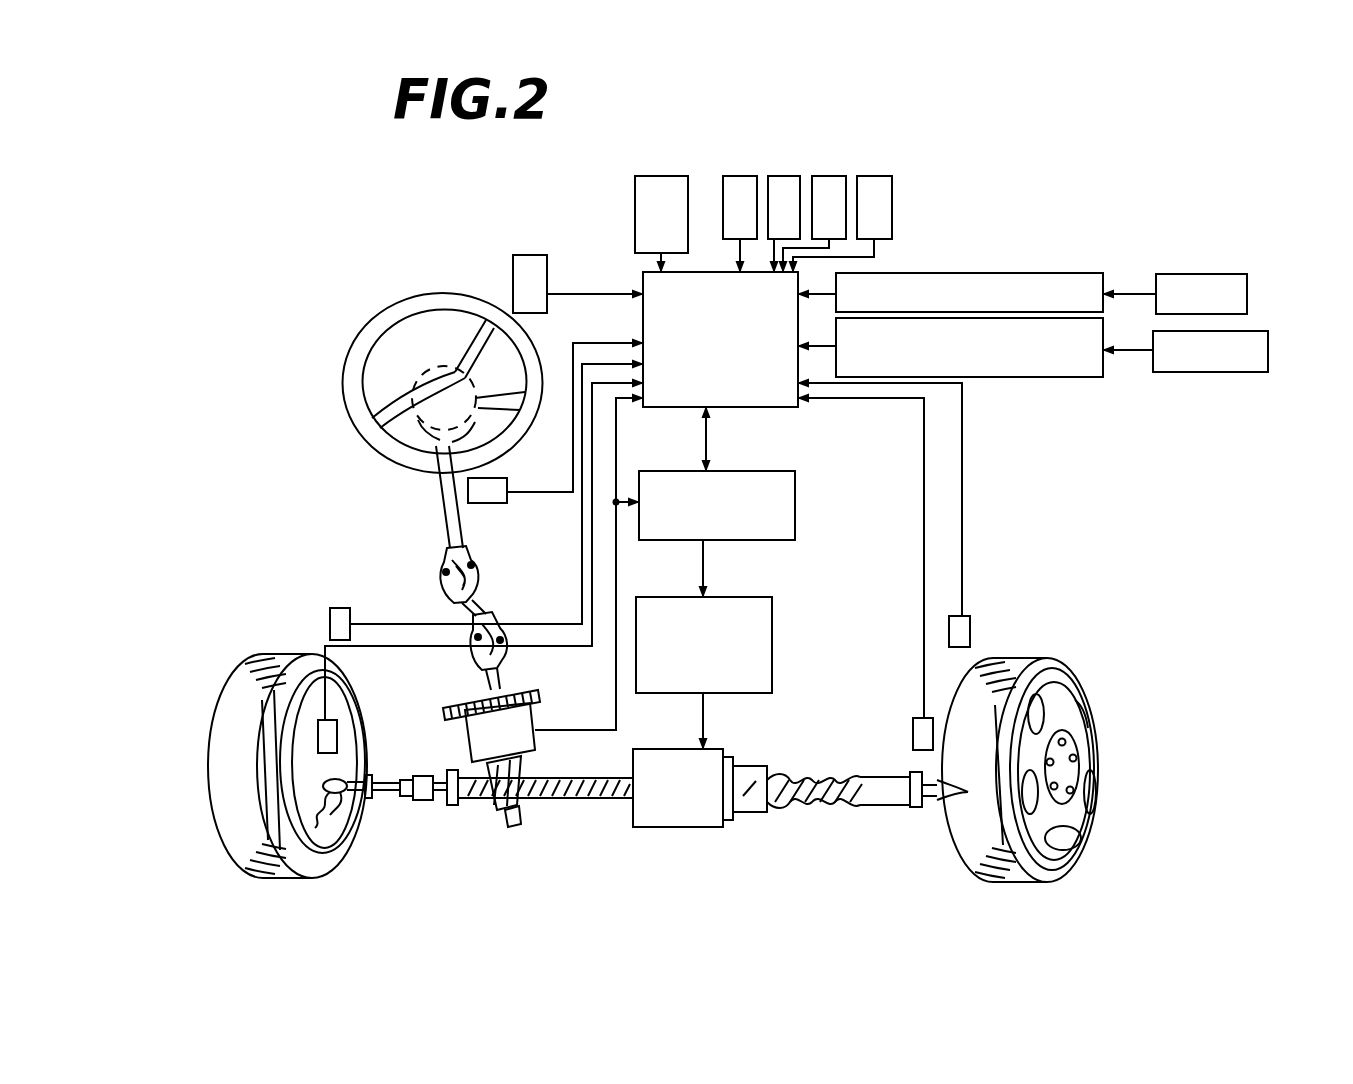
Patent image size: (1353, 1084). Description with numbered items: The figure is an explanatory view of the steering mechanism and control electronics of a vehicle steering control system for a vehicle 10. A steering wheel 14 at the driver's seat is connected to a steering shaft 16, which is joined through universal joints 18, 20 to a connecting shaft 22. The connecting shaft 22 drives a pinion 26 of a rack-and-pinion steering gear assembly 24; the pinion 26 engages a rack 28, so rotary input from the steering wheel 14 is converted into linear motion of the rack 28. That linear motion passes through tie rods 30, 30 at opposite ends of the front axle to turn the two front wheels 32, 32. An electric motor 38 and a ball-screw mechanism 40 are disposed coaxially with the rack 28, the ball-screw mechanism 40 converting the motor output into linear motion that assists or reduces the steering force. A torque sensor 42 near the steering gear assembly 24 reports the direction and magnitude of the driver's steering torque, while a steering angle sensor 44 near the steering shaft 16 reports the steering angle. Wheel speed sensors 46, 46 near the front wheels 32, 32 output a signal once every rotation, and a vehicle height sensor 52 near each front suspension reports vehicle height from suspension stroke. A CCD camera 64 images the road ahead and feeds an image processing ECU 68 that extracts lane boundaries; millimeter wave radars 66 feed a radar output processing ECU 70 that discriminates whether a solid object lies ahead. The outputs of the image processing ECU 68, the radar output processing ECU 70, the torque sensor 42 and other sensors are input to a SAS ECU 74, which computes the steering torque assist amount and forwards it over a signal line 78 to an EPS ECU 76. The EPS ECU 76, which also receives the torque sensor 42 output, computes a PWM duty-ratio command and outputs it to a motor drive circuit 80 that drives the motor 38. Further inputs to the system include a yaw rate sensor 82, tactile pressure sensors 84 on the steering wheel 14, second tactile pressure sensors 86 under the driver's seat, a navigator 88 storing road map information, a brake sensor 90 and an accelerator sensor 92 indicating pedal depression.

The vehicle 10 is at (1008, 568).
The steering wheel 14 is at (368, 342).
The steering shaft 16 is at (446, 500).
The universal joint 18 is at (468, 553).
The universal joint 20 is at (462, 636).
The connecting shaft 22 is at (500, 683).
The rack-and-pinion steering gear assembly 24 is at (495, 671).
The pinion 26 is at (497, 815).
The rack 28 is at (537, 775).
The tie rod 30 is at (347, 782).
The front wheel 32 is at (280, 645).
The electric motor 38 is at (688, 822).
The ball-screw mechanism 40 is at (820, 766).
The torque sensor 42 is at (535, 717).
The steering angle sensor 44 is at (488, 478).
The wheel speed sensor 46 is at (318, 720).
The vehicle height sensor 52 is at (330, 608).
The CCD camera 64 is at (1247, 294).
The millimeter wave radar 66 is at (1268, 350).
The image processing ECU 68 is at (1010, 273).
The radar output processing ECU 70 is at (1035, 377).
The SAS ECU 74 is at (763, 409).
The EPS ECU 76 is at (795, 502).
The signal line 78 is at (707, 432).
The motor drive circuit 80 is at (772, 624).
The yaw rate sensor 82 is at (740, 176).
The tactile pressure sensor 84 is at (526, 255).
The second tactile pressure sensor 86 is at (785, 176).
The navigator 88 is at (647, 176).
The brake sensor 90 is at (830, 176).
The accelerator sensor 92 is at (875, 176).